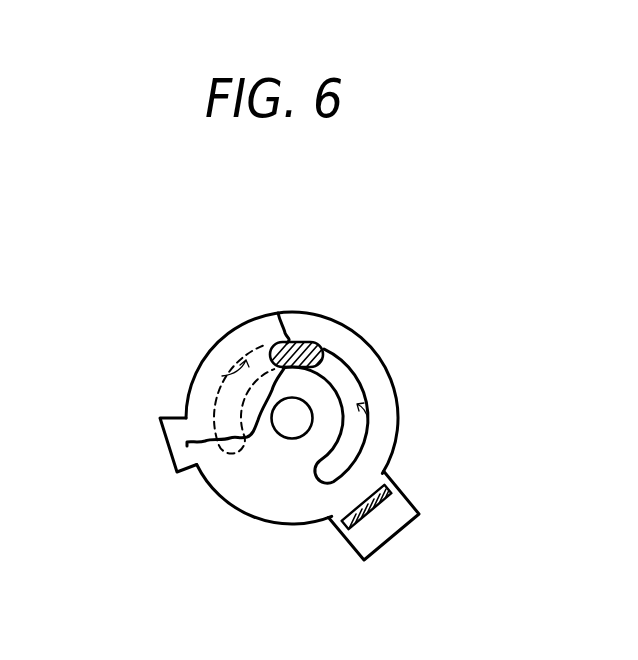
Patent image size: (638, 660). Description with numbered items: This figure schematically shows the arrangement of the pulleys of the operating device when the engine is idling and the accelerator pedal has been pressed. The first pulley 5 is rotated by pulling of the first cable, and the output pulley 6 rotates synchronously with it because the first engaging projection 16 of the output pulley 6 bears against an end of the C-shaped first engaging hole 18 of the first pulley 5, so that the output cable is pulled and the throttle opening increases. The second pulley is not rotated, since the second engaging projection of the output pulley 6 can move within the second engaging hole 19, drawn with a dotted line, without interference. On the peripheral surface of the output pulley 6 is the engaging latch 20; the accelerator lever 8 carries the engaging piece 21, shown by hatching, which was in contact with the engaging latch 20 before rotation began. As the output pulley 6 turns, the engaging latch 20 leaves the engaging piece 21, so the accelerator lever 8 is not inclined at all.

The first pulley 5 is at (368, 356).
The output pulley 6 is at (203, 384).
The accelerator lever 8 is at (373, 535).
The first engaging projection 16 is at (276, 364).
The first engaging hole 18 is at (372, 422).
The second engaging hole 19 is at (223, 373).
The engaging latch 20 is at (173, 450).
The engaging piece 21 is at (388, 507).